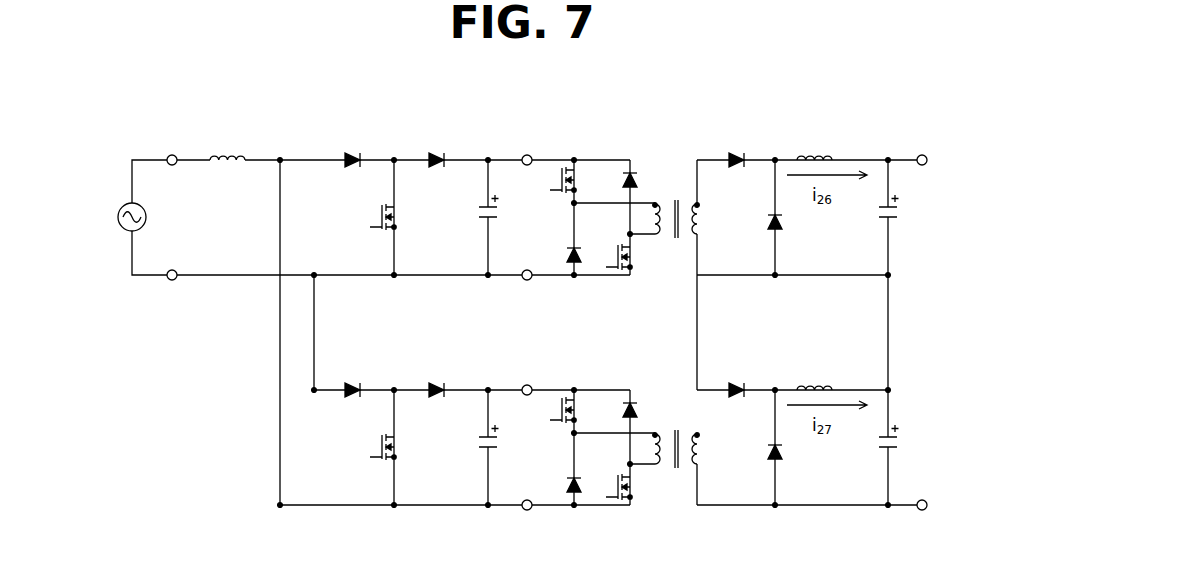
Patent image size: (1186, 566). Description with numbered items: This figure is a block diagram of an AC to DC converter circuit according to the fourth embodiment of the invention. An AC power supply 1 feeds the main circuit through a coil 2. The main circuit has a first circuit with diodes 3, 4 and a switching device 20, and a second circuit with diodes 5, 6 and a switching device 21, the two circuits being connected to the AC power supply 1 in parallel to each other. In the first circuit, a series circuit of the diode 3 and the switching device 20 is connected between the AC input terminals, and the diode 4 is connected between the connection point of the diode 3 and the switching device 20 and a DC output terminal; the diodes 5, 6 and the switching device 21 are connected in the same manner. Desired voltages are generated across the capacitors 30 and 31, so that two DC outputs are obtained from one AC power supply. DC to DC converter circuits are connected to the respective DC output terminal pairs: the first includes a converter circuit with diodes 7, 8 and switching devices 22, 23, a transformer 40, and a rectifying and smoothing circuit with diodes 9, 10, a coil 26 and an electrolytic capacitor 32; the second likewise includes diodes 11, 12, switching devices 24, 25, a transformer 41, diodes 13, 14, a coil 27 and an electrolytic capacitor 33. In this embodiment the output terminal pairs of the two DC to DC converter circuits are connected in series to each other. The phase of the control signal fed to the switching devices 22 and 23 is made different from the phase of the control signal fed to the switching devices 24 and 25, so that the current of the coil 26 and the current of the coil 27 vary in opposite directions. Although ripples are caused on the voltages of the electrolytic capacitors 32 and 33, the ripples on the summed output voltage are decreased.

The AC power supply 1 is at (117, 217).
The coil 2 is at (237, 150).
The diode 3 is at (355, 151).
The diode 4 is at (440, 151).
The diode 5 is at (355, 381).
The diode 6 is at (440, 381).
The diode 7 is at (620, 172).
The diode 8 is at (582, 255).
The diode 9 is at (740, 151).
The diode 10 is at (785, 222).
The diode 11 is at (620, 402).
The diode 12 is at (583, 485).
The diode 13 is at (740, 381).
The diode 14 is at (785, 452).
The switching device 20 is at (402, 214).
The switching device 21 is at (403, 444).
The switching device 22 is at (560, 178).
The switching device 23 is at (638, 257).
The switching device 24 is at (560, 408).
The switching device 25 is at (639, 487).
The coil 26 is at (812, 151).
The coil 27 is at (812, 381).
The capacitor 30 is at (498, 212).
The capacitor 31 is at (498, 442).
The electrolytic capacitor 32 is at (904, 210).
The electrolytic capacitor 33 is at (904, 442).
The transformer 40 is at (666, 183).
The transformer 41 is at (666, 413).